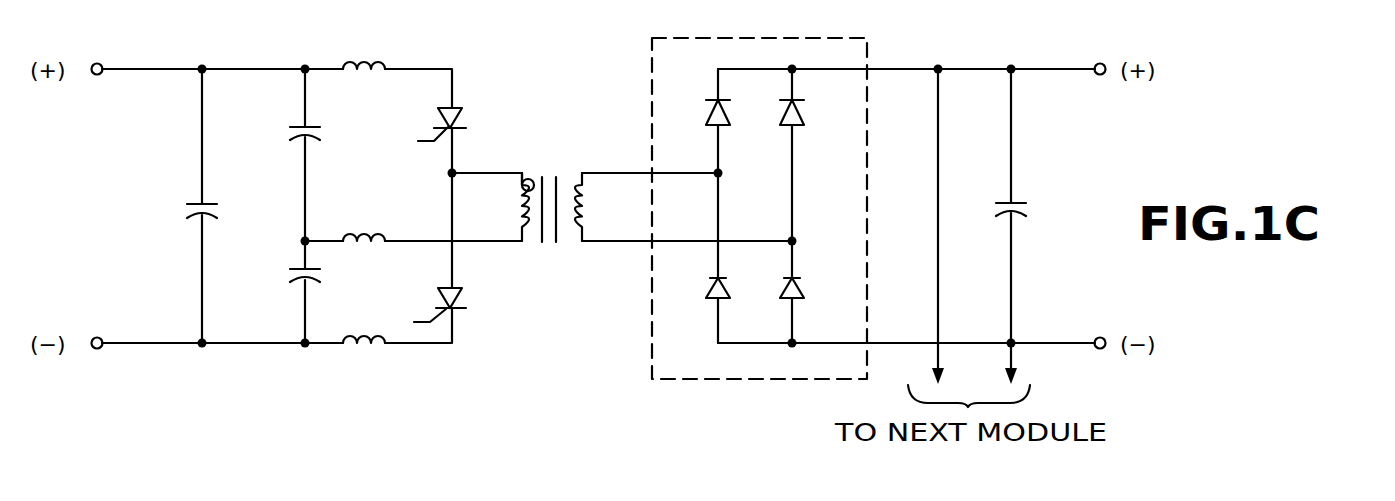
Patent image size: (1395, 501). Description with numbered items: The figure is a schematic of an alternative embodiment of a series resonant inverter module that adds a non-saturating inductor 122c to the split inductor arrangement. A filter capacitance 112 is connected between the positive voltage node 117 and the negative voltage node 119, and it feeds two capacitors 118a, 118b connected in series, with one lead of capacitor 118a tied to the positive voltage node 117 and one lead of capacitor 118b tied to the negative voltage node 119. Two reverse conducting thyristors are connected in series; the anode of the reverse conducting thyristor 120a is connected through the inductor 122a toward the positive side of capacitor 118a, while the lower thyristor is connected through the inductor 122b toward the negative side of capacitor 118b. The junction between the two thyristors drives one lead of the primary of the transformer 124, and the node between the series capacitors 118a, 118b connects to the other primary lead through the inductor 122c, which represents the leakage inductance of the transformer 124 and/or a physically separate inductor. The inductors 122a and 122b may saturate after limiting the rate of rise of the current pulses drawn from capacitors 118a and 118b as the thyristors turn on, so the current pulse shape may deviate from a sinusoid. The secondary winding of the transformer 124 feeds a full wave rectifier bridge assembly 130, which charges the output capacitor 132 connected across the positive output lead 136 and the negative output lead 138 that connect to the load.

The filter capacitance 112 is at (198, 197).
The positive voltage node 117 is at (103, 64).
The capacitor 118a is at (299, 124).
The capacitor 118b is at (296, 266).
The negative voltage node 119 is at (103, 338).
The reverse conducting thyristor 120a is at (464, 118).
The inductor 122a is at (370, 62).
The inductor 122b is at (372, 350).
The inductor 122c is at (364, 233).
The transformer 124 is at (543, 178).
The full wave rectifier bridge assembly 130 is at (646, 60).
The output capacitor 132 is at (1018, 200).
The positive output lead 136 is at (1096, 75).
The negative output lead 138 is at (1096, 338).